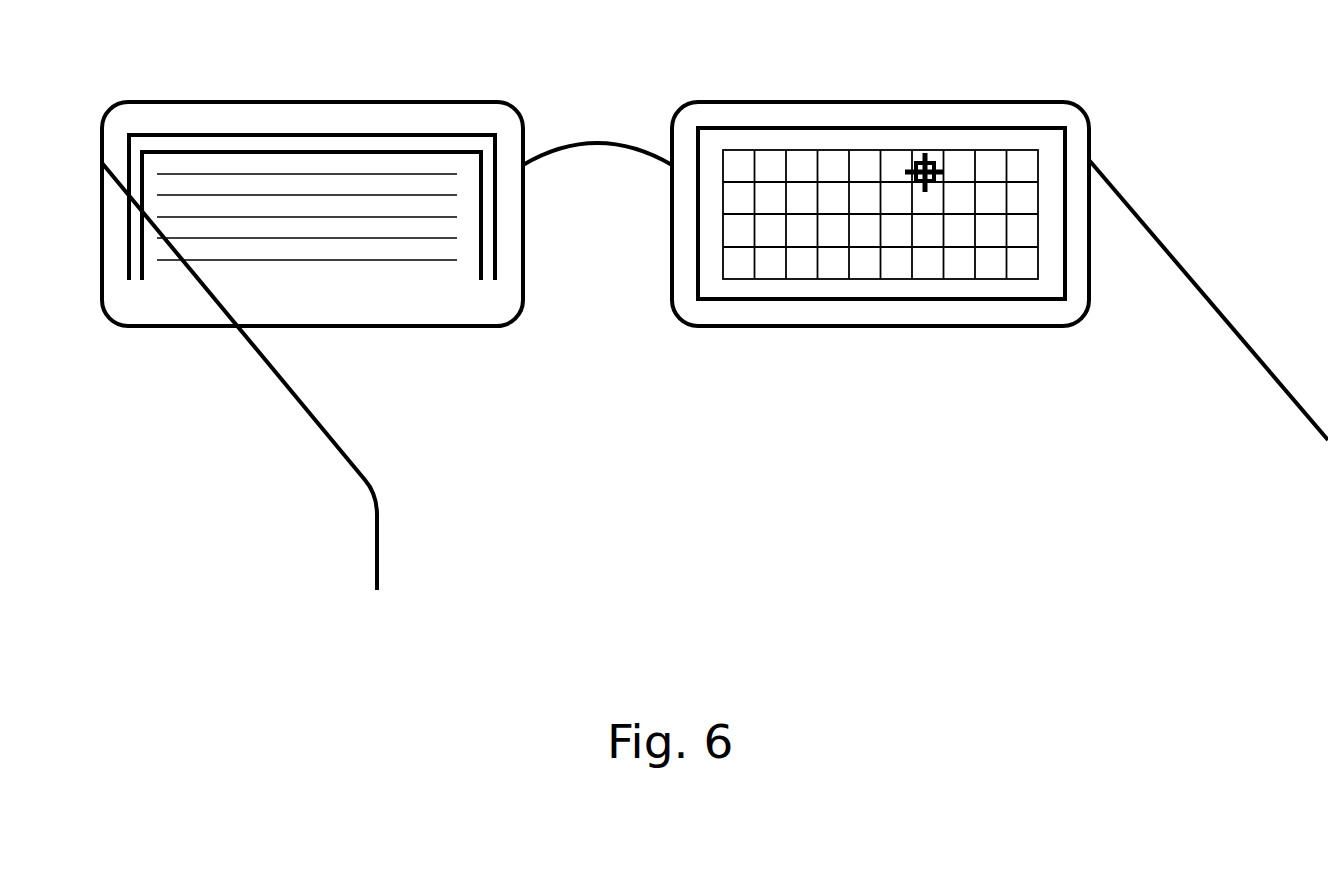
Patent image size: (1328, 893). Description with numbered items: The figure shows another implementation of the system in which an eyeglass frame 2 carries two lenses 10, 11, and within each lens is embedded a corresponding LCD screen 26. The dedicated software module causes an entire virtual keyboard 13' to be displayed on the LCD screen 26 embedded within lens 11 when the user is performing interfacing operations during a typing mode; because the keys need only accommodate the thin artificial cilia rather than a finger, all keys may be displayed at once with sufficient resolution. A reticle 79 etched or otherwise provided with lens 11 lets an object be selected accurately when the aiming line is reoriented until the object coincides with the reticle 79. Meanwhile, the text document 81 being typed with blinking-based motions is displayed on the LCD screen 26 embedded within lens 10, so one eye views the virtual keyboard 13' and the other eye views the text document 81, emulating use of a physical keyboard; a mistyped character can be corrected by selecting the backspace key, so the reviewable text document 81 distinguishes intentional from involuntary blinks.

The eyeglass frame 2 is at (715, 336).
The lens 10 is at (362, 117).
The lens 11 is at (987, 117).
The LCD screen 26 is at (168, 147).
The reticle 79 is at (908, 162).
The text document 81 is at (368, 270).
The virtual keyboard 13' is at (880, 292).